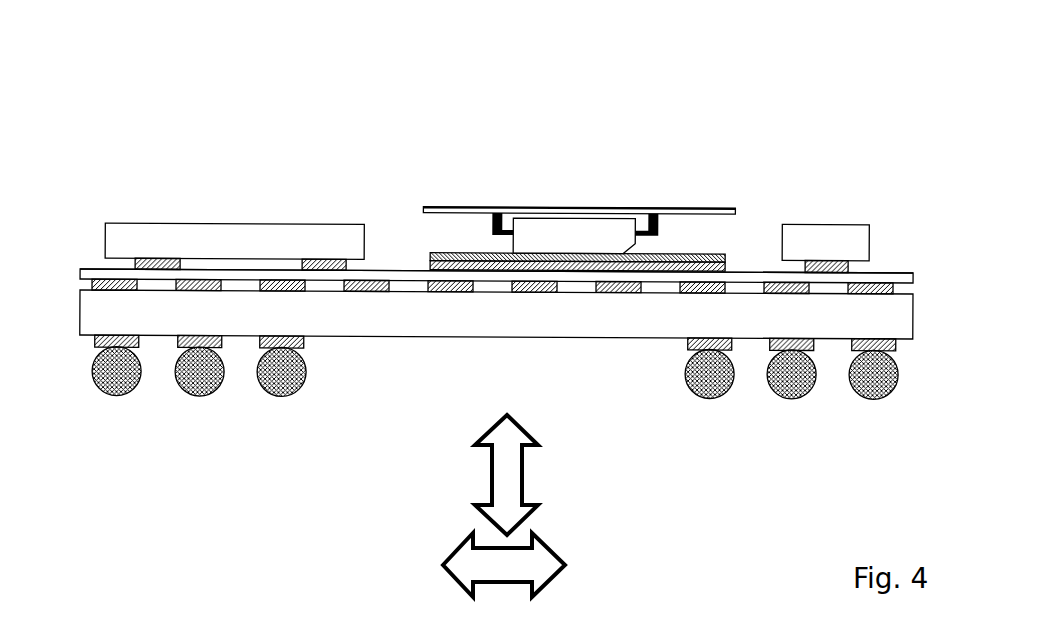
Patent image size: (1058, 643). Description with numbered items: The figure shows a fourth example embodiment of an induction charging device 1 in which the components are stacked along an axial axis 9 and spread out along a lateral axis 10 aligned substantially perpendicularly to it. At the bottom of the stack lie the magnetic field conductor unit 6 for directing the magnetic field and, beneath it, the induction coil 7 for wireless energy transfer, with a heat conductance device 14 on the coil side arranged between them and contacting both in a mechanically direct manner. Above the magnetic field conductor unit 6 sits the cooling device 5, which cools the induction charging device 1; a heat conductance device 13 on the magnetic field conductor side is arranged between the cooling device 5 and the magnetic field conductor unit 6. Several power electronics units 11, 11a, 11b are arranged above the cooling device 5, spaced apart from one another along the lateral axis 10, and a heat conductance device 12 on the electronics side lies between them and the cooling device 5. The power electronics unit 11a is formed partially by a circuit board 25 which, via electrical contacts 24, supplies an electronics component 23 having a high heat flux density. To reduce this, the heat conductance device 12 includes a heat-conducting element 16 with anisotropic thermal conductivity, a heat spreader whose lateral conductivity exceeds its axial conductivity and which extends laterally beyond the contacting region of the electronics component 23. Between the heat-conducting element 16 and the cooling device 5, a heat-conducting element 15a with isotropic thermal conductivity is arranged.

The induction charging device 1 is at (90, 125).
The cooling device 5 is at (93, 268).
The magnetic field conductor unit 6 is at (115, 317).
The induction coil 7 is at (270, 392).
The axial axis 9 is at (510, 478).
The lateral axis 10 is at (477, 563).
The power electronics unit 11 is at (128, 242).
The power electronics unit 11a is at (560, 152).
The power electronics unit 11b is at (837, 242).
The heat conductance device on the electronics side 12 is at (885, 263).
The heat conductance device on the magnetic field conductor side 13 is at (898, 287).
The heat conductance device on the coil side 14 is at (908, 346).
The heat-conducting element 15a is at (722, 266).
The heat-conducting element with anisotropic thermal conductivity 16 is at (710, 253).
The electronics component 23 is at (523, 248).
The electrical contacts 24 is at (488, 223).
The circuit board 25 is at (477, 207).